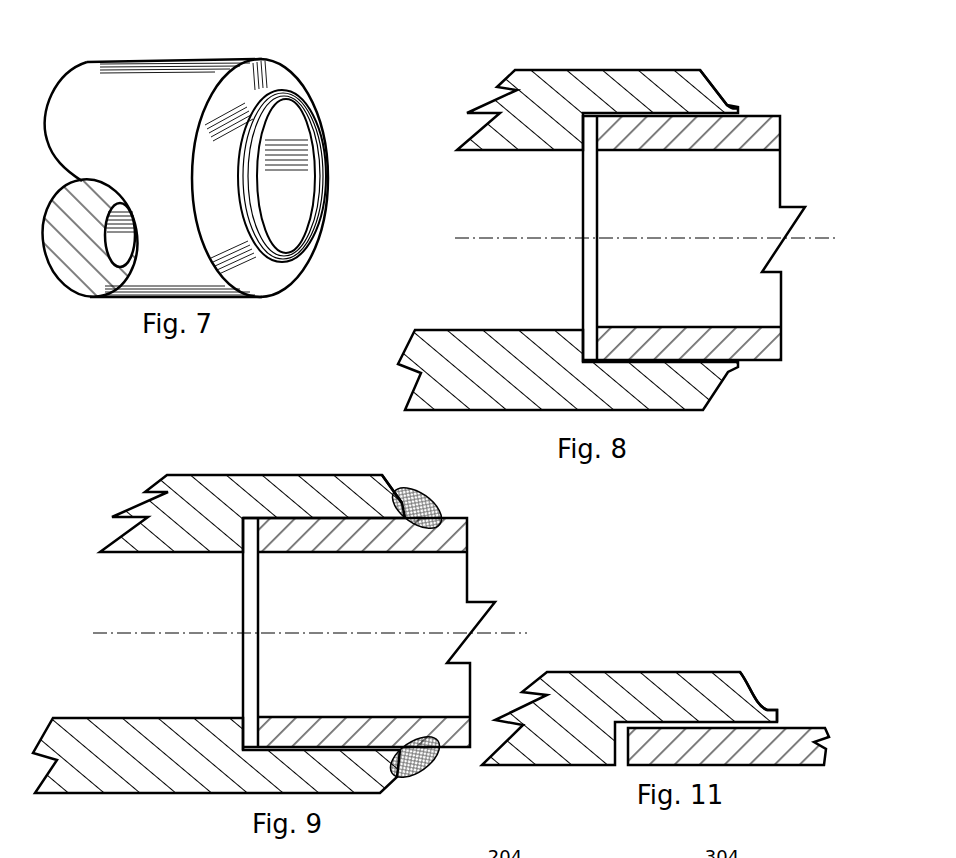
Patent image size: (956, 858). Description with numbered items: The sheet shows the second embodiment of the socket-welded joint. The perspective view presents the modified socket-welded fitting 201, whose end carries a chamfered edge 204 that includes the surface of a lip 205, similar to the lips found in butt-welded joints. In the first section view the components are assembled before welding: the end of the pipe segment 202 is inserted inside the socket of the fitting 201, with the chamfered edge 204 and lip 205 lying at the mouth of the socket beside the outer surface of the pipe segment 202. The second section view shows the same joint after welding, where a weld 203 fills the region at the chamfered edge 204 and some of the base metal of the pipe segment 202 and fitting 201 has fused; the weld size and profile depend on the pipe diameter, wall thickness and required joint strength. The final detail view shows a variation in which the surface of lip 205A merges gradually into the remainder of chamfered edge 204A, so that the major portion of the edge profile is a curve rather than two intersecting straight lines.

In FIG. 7, the modified socket-welded fitting 201 is at (85, 88).
In FIG. 8, the modified socket-welded fitting 201 is at (595, 77).
In FIG. 9, the modified socket-welded fitting 201 is at (278, 483).
In FIG. 11, the modified socket-welded fitting 201 is at (632, 680).
In FIG. 8, the pipe segment 202 is at (770, 137).
In FIG. 9, the pipe segment 202 is at (458, 535).
In FIG. 11, the pipe segment 202 is at (798, 733).
In FIG. 9, the weld 203 is at (413, 500).
In FIG. 7, the chamfered edge 204 is at (283, 80).
In FIG. 8, the chamfered edge 204 is at (710, 77).
In FIG. 9, the chamfered edge 204 is at (383, 476).
In FIG. 7, the lip 205 is at (324, 152).
In FIG. 8, the lip 205 is at (733, 102).
In FIG. 11, the chamfered edge 204A is at (750, 682).
In FIG. 11, the lip 205A is at (767, 713).